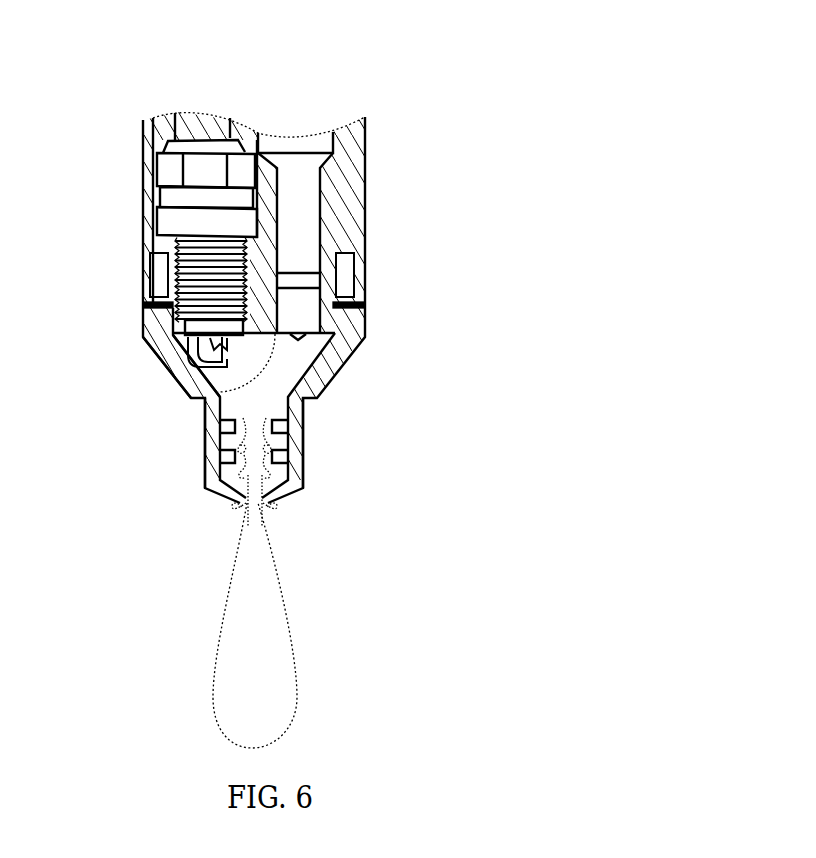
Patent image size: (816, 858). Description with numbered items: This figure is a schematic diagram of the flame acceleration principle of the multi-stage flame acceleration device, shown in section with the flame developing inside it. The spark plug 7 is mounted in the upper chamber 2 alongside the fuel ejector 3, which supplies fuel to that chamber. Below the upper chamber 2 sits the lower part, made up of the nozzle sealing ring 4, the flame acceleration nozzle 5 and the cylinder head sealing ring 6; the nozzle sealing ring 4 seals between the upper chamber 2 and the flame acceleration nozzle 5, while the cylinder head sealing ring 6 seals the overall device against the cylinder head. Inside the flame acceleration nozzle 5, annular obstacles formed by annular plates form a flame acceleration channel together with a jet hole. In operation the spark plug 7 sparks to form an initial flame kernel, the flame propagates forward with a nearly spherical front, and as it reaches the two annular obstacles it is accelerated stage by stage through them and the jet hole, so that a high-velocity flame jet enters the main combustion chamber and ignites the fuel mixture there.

The upper chamber 2 is at (365, 163).
The fuel ejector 3 is at (303, 260).
The nozzle sealing ring 4 is at (363, 300).
The flame acceleration nozzle 5 is at (293, 448).
The cylinder head sealing ring 6 is at (150, 350).
The spark plug 7 is at (207, 217).